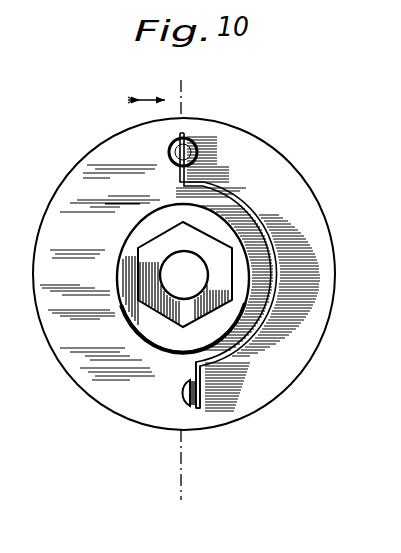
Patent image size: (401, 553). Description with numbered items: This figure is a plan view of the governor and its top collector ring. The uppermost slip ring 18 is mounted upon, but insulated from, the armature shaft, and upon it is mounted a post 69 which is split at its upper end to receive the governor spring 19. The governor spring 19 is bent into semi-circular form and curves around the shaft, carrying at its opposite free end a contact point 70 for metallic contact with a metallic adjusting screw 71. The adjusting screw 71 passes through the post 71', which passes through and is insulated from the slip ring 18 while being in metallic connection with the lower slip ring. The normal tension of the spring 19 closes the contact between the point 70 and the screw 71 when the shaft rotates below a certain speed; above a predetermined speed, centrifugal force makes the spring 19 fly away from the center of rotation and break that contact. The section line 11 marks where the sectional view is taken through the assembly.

The section line 11 is at (180, 293).
The disc 18 is at (313, 317).
The arcuate arm 19 is at (252, 204).
The pin 69 is at (172, 146).
The arm 70 is at (197, 410).
The pin 71 is at (172, 404).
The pin head 71' is at (175, 381).